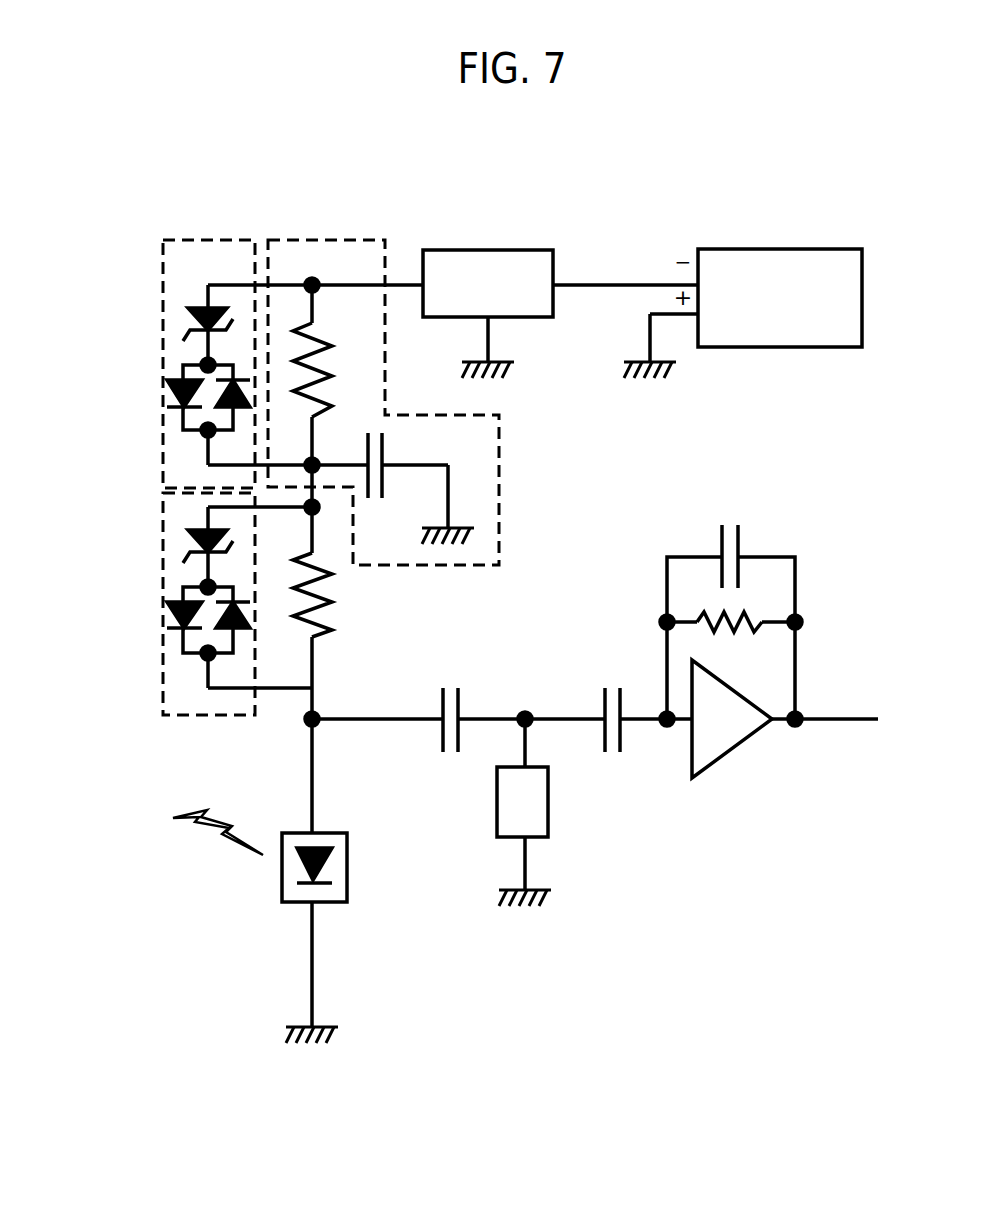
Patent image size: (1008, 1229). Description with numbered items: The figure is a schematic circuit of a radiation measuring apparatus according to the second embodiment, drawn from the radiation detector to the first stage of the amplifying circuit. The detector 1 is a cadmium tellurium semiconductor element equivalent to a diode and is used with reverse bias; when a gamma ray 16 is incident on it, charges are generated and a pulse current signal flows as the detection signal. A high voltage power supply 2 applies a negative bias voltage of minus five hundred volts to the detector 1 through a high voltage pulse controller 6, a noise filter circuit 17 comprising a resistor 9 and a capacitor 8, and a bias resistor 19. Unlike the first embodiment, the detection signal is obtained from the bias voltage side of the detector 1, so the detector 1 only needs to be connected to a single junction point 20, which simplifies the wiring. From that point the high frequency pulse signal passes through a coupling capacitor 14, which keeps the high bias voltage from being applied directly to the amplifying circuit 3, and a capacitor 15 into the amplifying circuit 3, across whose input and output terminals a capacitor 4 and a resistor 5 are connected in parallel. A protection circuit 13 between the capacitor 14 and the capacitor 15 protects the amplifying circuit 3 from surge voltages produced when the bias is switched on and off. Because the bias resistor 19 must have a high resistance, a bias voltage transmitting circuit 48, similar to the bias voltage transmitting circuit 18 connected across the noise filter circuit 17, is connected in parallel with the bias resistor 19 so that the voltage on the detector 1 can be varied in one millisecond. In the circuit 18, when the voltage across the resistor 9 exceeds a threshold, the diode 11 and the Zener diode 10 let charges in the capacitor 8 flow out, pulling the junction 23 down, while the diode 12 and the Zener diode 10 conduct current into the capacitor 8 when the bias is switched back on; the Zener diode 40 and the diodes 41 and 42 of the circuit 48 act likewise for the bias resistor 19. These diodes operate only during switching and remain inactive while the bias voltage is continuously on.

The detector 1 is at (282, 887).
The high voltage power supply 2 is at (772, 249).
The amplifying circuit 3 is at (735, 730).
The capacitor 4 is at (732, 520).
The resistor 5 is at (755, 607).
The high voltage pulse controller 6 is at (490, 250).
The capacitor 8 is at (390, 445).
The resistor 9 is at (330, 370).
The Zener diode 10 is at (185, 328).
The diode 11 is at (165, 390).
The diode 12 is at (207, 410).
The protection circuit 13 is at (548, 815).
The capacitor 14 is at (450, 688).
The capacitor 15 is at (610, 688).
The radiation ray 16 is at (190, 823).
The noise filter circuit 17 is at (318, 240).
The bias voltage transmitting circuit 18 is at (206, 240).
The bias resistor 19 is at (333, 598).
The junction point 20 is at (327, 710).
The junction 23 is at (324, 513).
The Zener diode 40 is at (185, 550).
The diode 41 is at (165, 632).
The diode 42 is at (207, 635).
The bias voltage transmitting circuit 48 is at (200, 715).